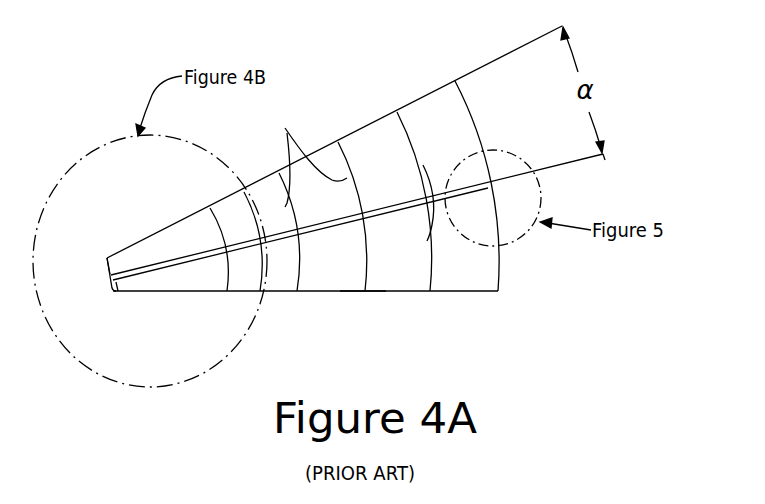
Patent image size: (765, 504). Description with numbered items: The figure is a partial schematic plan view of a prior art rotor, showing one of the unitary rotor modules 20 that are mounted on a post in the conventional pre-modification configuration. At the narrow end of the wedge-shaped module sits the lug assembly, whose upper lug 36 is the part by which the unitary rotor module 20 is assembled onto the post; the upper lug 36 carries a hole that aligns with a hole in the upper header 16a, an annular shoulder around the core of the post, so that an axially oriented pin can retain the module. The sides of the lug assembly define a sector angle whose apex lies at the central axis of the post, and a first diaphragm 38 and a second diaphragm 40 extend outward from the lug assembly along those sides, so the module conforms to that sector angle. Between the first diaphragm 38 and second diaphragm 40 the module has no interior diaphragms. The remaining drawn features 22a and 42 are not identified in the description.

The upper header 16a is at (110, 256).
The unitary rotor module 20 is at (487, 121).
The base region 22a is at (340, 291).
The upper lug 36 is at (130, 284).
The first diaphragm 38 is at (427, 195).
The second diaphragm 40 is at (377, 118).
The layer bulge 42 is at (287, 133).